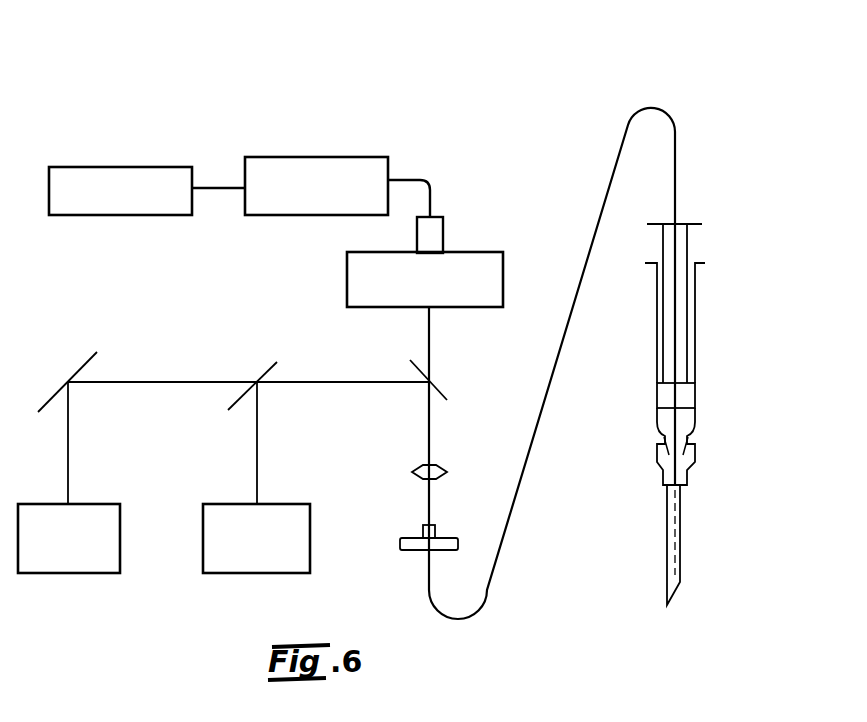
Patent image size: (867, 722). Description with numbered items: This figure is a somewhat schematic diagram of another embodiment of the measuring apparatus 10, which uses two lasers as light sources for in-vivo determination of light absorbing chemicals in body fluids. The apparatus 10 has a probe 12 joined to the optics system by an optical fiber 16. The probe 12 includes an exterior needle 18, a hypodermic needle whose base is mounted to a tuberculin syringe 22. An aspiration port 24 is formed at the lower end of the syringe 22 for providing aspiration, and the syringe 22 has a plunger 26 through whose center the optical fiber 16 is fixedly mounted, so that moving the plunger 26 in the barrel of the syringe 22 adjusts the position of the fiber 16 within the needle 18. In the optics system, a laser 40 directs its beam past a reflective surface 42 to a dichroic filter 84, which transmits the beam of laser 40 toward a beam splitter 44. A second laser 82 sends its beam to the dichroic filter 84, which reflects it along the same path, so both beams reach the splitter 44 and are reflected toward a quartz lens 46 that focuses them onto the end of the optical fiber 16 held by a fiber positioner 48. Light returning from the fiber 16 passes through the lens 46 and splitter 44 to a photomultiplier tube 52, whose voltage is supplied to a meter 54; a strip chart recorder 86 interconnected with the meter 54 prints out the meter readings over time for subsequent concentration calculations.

The measuring apparatus 10 is at (473, 137).
The probe 12 is at (706, 205).
The optical fiber 16 is at (675, 128).
The exterior needle 18 is at (665, 536).
The tuberculin syringe 22 is at (697, 318).
The aspiration port 24 is at (704, 410).
The plunger 26 is at (688, 240).
The laser 40 is at (88, 503).
The reflective surface 42 is at (80, 367).
The beam splitter 44 is at (437, 378).
The quartz lens 46 is at (437, 466).
The fiber positioner 48 is at (444, 537).
The photomultiplier tube 52 is at (444, 228).
The meter 54 is at (315, 156).
The second laser 82 is at (284, 503).
The dichroic filter 84 is at (262, 372).
The recorder 86 is at (127, 165).